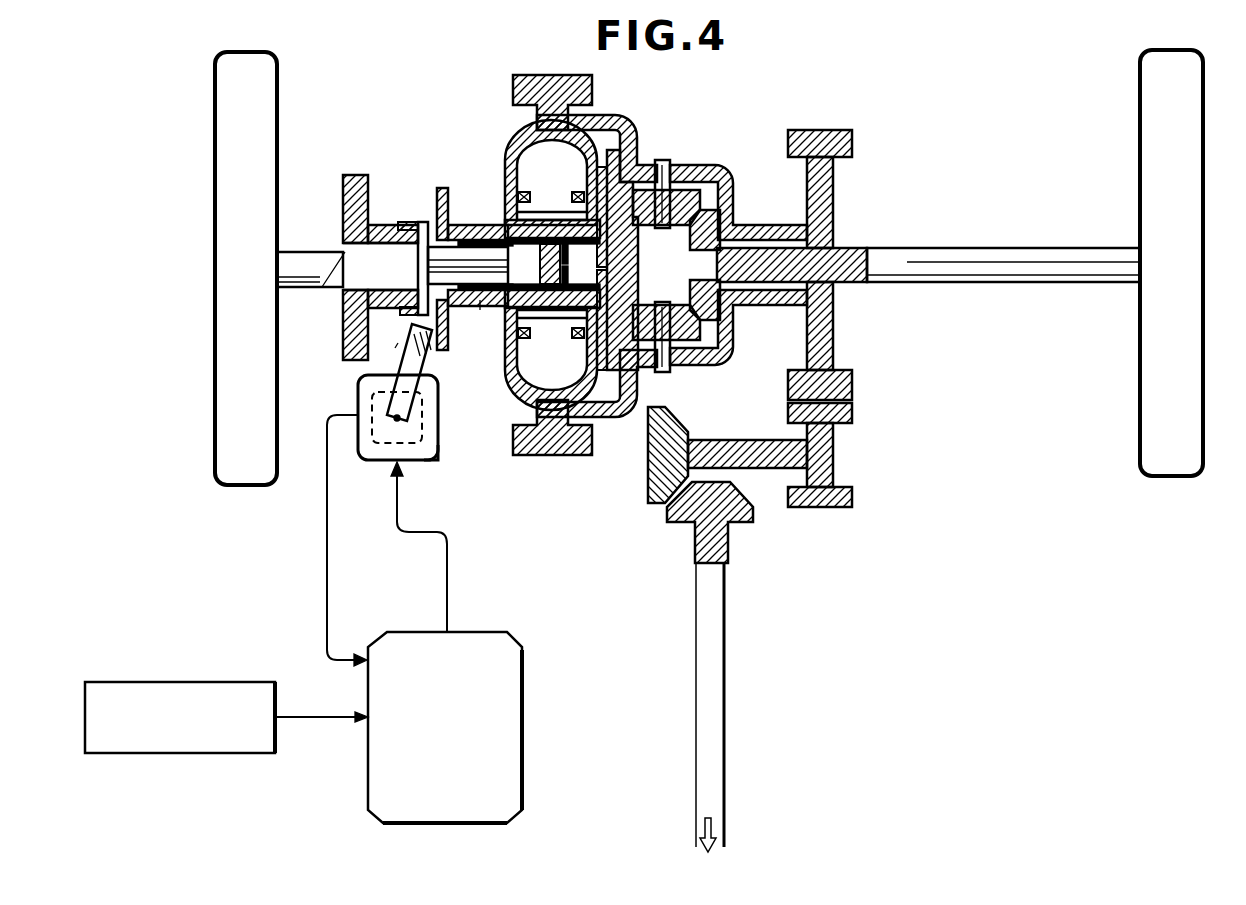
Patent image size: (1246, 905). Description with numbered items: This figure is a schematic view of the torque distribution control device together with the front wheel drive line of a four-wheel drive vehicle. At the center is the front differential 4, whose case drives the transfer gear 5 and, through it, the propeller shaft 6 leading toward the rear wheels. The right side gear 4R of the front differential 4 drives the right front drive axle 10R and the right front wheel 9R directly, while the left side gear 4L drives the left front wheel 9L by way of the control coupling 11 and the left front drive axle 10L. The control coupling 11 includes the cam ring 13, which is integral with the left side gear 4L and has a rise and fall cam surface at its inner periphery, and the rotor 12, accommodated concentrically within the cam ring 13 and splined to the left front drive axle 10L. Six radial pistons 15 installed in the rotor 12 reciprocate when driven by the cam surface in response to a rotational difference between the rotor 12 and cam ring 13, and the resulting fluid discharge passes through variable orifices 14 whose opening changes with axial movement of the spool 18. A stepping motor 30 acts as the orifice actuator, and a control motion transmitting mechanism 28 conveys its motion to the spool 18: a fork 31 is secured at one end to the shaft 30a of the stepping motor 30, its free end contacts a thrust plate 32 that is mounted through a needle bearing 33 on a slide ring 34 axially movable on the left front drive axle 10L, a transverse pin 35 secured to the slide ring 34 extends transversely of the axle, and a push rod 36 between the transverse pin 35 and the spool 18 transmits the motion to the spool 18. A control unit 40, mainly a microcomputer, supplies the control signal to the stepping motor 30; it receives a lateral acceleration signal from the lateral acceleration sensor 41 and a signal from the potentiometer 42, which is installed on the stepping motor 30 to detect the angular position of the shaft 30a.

The left front wheel 9L is at (215, 74).
The right front wheel 9R is at (1140, 87).
The left front drive axle 10L is at (298, 252).
The right front drive axle 10R is at (965, 247).
The control coupling 11 is at (510, 73).
The rotor 12 is at (510, 173).
The cam ring 13 is at (533, 147).
The variable orifices 14 is at (507, 212).
The radial pistons 15 is at (547, 172).
The spool 18 is at (513, 240).
The thrust plate 32 is at (401, 152).
The needle bearing 33 is at (440, 188).
The slide ring 34 is at (434, 215).
The transverse pin 35 is at (418, 252).
The push rod 36 is at (480, 305).
The front differential 4 is at (691, 155).
The left side gear 4L is at (647, 290).
The right side gear 4R is at (748, 182).
The transfer gear 5 is at (873, 402).
The propeller shaft 6 is at (726, 688).
The control motion transmitting mechanism 28 is at (390, 344).
The stepping motor 30 is at (438, 413).
The shaft 30a is at (438, 452).
The fork 31 is at (426, 370).
The control unit 40 is at (523, 686).
The lateral acceleration sensor 41 is at (192, 682).
The potentiometer 42 is at (380, 407).